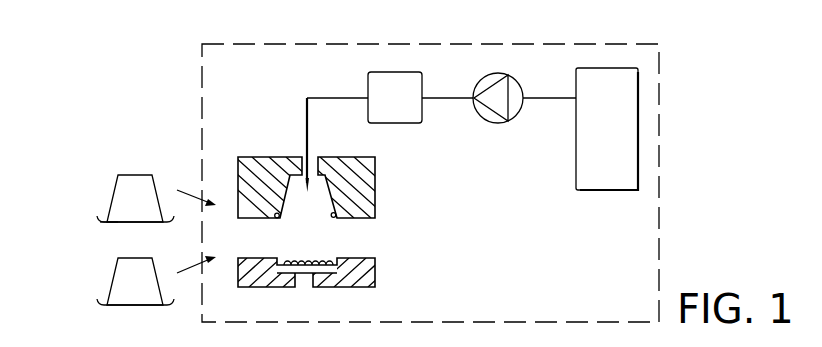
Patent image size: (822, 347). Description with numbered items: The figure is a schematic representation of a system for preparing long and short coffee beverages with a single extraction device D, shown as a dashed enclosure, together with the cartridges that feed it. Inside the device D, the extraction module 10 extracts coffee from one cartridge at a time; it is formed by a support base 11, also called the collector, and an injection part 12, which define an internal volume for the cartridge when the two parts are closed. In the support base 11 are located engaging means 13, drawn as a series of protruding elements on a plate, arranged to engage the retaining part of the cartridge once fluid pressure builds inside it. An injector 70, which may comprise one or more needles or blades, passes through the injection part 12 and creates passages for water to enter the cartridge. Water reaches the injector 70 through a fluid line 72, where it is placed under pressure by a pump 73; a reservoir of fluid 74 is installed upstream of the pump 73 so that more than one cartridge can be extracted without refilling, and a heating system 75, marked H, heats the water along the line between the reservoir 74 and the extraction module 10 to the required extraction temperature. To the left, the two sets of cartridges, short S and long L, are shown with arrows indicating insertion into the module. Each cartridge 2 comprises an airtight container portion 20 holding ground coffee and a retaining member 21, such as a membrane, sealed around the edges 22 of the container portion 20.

The cartridge 2 is at (45, 162).
The airtight container portion 20 is at (113, 193).
The retaining member 21 is at (118, 226).
The edges of the container portion 22 is at (100, 220).
The extraction module 10 is at (344, 215).
The support base 11 is at (375, 282).
The injection part 12 is at (372, 160).
The engaging means 13 is at (333, 256).
The injector 70 is at (320, 157).
The fluid line 72 is at (332, 97).
The pump 73 is at (496, 73).
The reservoir of fluid 74 is at (638, 167).
The heating system 75 is at (391, 72).
The device D is at (661, 120).